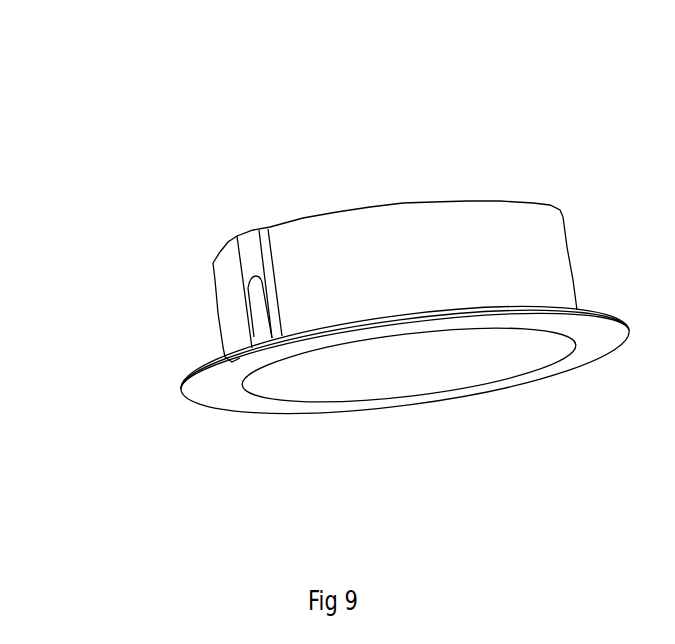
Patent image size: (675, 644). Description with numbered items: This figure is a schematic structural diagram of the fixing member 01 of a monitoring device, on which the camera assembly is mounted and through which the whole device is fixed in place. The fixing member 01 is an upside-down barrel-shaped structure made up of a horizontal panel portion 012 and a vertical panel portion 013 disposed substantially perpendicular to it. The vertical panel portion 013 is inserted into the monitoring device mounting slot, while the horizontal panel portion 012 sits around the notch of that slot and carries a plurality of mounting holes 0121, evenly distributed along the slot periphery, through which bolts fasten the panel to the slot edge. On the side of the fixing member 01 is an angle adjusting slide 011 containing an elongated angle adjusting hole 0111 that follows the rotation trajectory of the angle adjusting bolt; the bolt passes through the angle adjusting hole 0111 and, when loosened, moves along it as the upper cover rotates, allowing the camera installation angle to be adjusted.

The fixing member 01 is at (410, 155).
The angle adjusting slide 011 is at (253, 245).
The angle adjusting hole 0111 is at (250, 308).
The horizontal panel portion 012 is at (203, 388).
The mounting holes 0121 is at (242, 352).
The vertical panel portion 013 is at (347, 247).